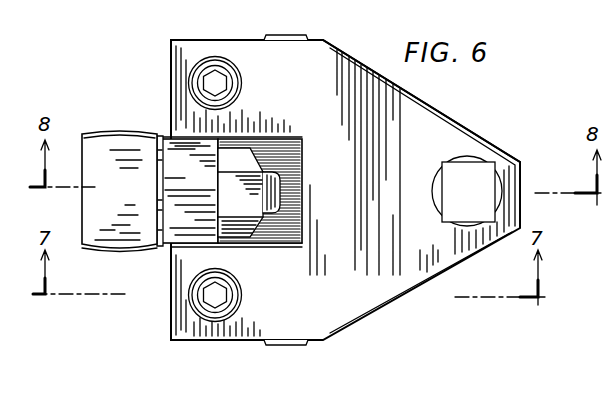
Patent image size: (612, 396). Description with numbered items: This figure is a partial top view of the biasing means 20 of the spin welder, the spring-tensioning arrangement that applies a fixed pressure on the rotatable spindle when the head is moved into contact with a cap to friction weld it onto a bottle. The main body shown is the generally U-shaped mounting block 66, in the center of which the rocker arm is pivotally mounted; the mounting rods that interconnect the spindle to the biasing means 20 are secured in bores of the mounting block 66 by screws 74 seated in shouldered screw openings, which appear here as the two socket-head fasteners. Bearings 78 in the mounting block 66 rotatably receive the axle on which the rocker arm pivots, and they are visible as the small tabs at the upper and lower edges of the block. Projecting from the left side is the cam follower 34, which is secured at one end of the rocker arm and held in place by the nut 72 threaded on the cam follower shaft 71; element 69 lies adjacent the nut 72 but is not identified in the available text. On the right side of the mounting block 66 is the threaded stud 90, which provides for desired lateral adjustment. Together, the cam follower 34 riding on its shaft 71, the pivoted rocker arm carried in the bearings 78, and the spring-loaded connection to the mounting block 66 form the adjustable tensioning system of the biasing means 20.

The biasing means 20 is at (385, 310).
The cam follower 34 is at (120, 132).
The mounting block 66 is at (435, 120).
The nut 69 is at (188, 232).
The cam follower shaft 71 is at (300, 182).
The nut 72 is at (240, 240).
The screws 74 is at (226, 78).
The bearings 78 is at (303, 36).
The threaded stud 90 is at (480, 152).